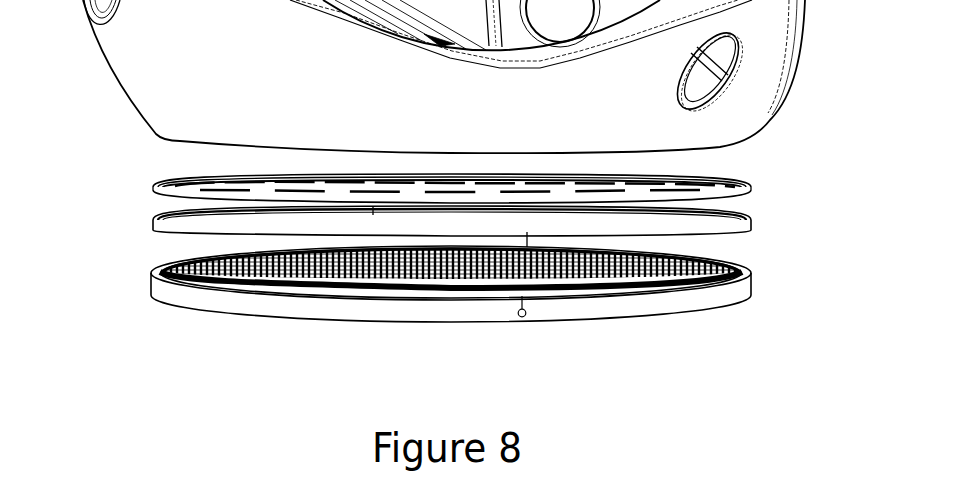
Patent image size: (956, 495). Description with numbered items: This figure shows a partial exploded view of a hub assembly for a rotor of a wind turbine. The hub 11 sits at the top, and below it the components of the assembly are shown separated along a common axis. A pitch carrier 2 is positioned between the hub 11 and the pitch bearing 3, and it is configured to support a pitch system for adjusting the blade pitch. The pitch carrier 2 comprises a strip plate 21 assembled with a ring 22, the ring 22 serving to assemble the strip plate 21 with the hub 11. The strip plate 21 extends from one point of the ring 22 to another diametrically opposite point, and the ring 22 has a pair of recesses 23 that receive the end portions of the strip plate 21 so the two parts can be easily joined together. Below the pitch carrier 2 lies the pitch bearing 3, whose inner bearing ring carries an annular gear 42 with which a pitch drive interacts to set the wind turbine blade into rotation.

The hub 11 is at (255, 69).
The pitch carrier 2 is at (433, 246).
The strip plate 21 is at (194, 172).
The recesses 23 is at (160, 204).
The ring 22 is at (665, 230).
The pitch bearing 3 is at (156, 286).
The annular gear 42 is at (458, 280).